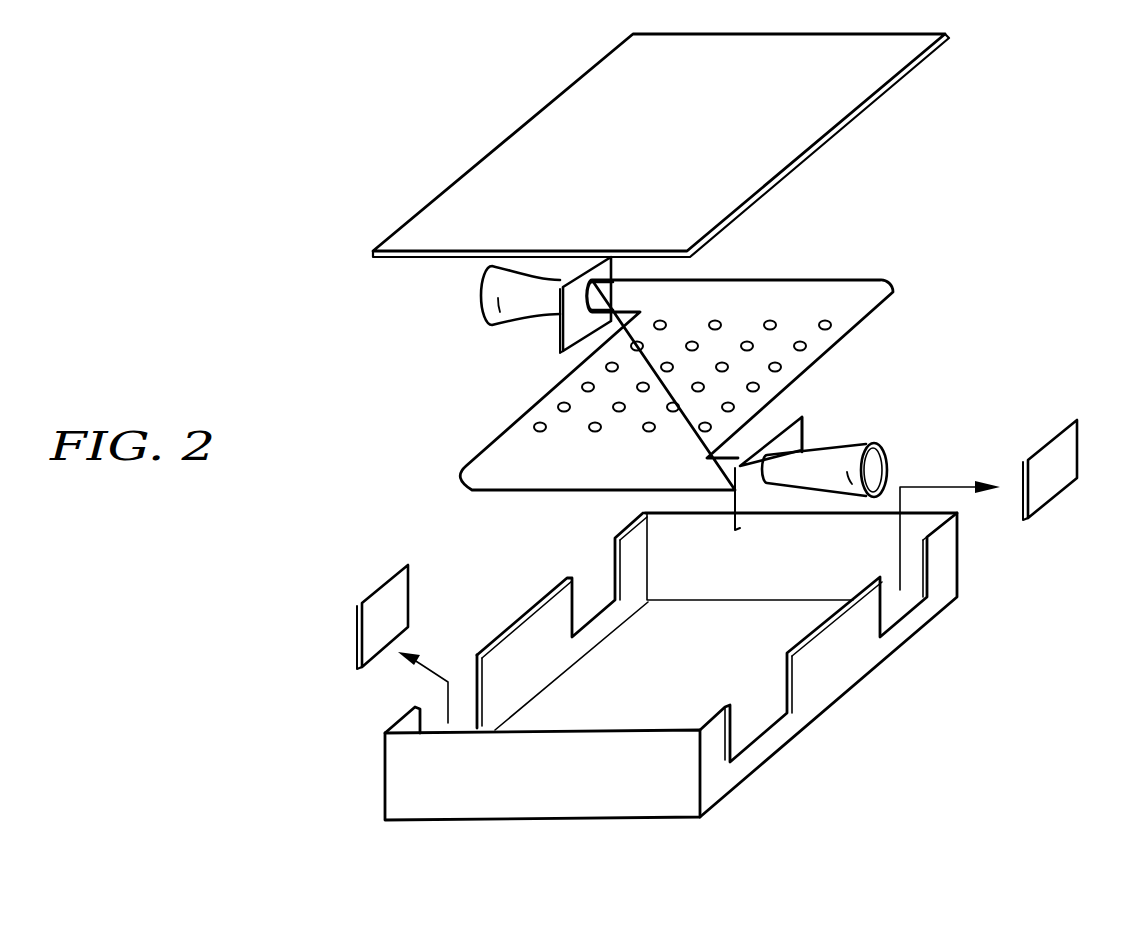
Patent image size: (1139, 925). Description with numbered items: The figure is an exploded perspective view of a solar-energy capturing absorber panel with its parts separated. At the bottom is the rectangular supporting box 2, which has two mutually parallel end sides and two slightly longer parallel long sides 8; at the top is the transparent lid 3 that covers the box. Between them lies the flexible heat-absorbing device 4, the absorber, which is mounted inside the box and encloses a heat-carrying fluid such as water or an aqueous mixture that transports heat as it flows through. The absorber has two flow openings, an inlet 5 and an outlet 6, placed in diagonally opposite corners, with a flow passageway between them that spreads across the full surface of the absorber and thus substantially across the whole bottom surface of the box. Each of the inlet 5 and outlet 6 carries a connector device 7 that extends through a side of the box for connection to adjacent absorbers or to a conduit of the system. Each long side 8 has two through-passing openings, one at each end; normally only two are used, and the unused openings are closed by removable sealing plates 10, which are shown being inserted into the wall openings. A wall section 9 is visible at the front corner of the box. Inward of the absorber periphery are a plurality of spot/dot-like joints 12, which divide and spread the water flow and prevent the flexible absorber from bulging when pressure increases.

The supporting box 2 is at (542, 821).
The transparent lid 3 is at (675, 153).
The flexible heat-absorbing device 4 is at (877, 297).
The inlet 5 is at (477, 295).
The outlet 6 is at (884, 470).
The connector device 7 is at (828, 453).
The long side 8 is at (838, 660).
The wall section 9 is at (433, 717).
The sealing plate 10 is at (360, 634).
The spot/dot-like joint 12 is at (772, 321).